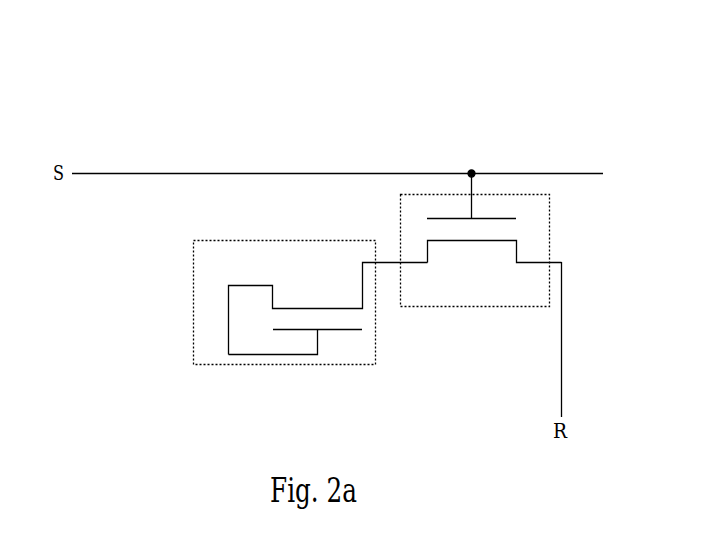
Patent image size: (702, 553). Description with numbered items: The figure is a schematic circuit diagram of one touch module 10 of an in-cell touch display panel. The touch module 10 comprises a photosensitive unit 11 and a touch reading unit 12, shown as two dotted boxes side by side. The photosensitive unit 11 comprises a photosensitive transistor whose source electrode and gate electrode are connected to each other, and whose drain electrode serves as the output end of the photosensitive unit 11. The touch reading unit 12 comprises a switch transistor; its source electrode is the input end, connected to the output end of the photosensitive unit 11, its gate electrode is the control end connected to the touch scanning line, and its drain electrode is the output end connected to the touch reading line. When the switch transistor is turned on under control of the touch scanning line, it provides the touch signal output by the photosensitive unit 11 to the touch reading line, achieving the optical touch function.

The touch module 10 is at (378, 206).
The photosensitive unit 11 is at (264, 240).
The touch reading unit 12 is at (440, 194).